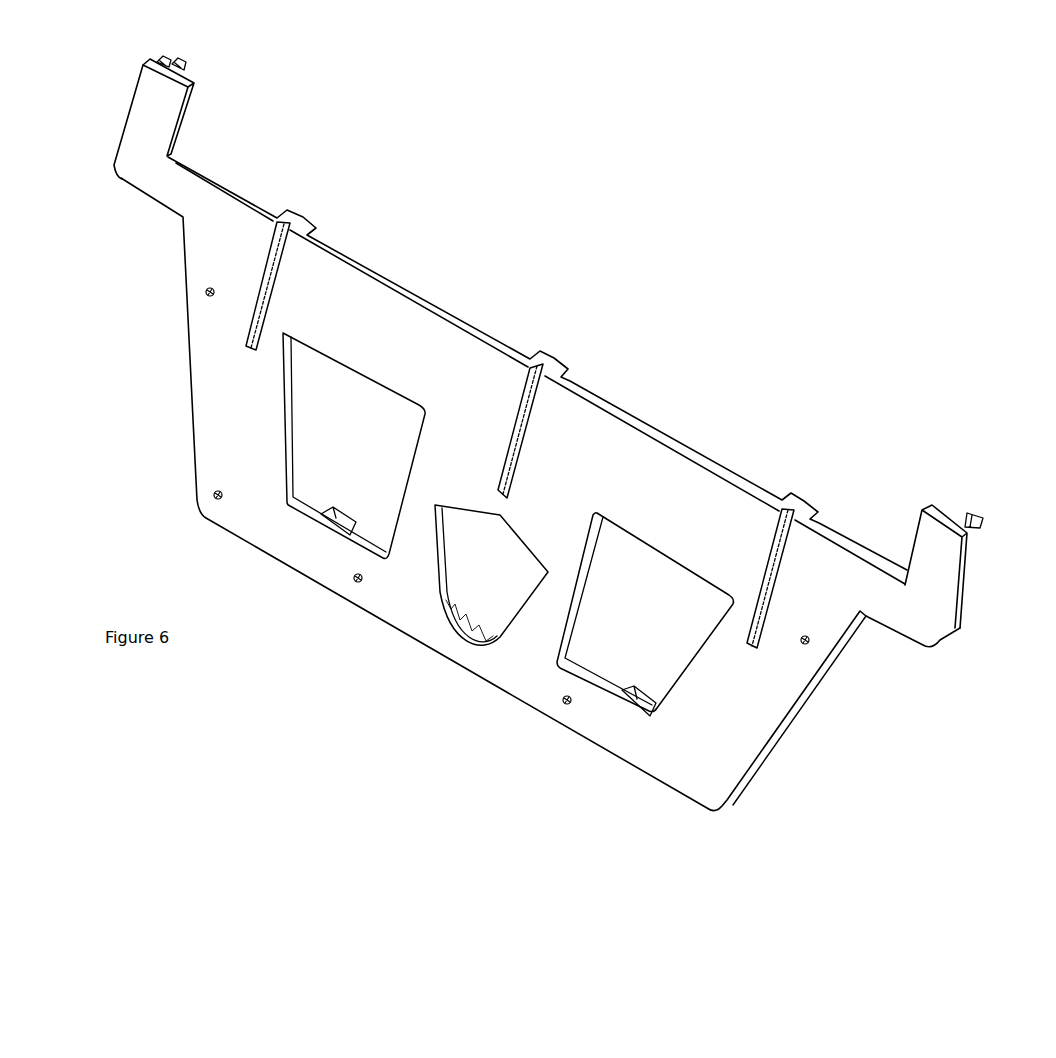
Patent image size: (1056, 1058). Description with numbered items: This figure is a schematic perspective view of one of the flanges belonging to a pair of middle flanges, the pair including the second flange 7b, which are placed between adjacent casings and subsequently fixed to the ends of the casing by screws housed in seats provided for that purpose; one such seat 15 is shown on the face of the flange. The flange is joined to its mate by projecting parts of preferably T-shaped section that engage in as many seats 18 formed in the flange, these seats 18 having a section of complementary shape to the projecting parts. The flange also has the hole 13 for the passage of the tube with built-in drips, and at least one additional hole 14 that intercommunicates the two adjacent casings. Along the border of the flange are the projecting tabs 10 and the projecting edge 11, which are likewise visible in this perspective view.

The second flange 7b is at (363, 297).
The projecting tabs 10 is at (182, 62).
The projecting edge 11 is at (150, 62).
The hole 13 is at (515, 572).
The additional hole 14 is at (378, 430).
The seat 15 is at (207, 295).
The seats 18 is at (304, 215).